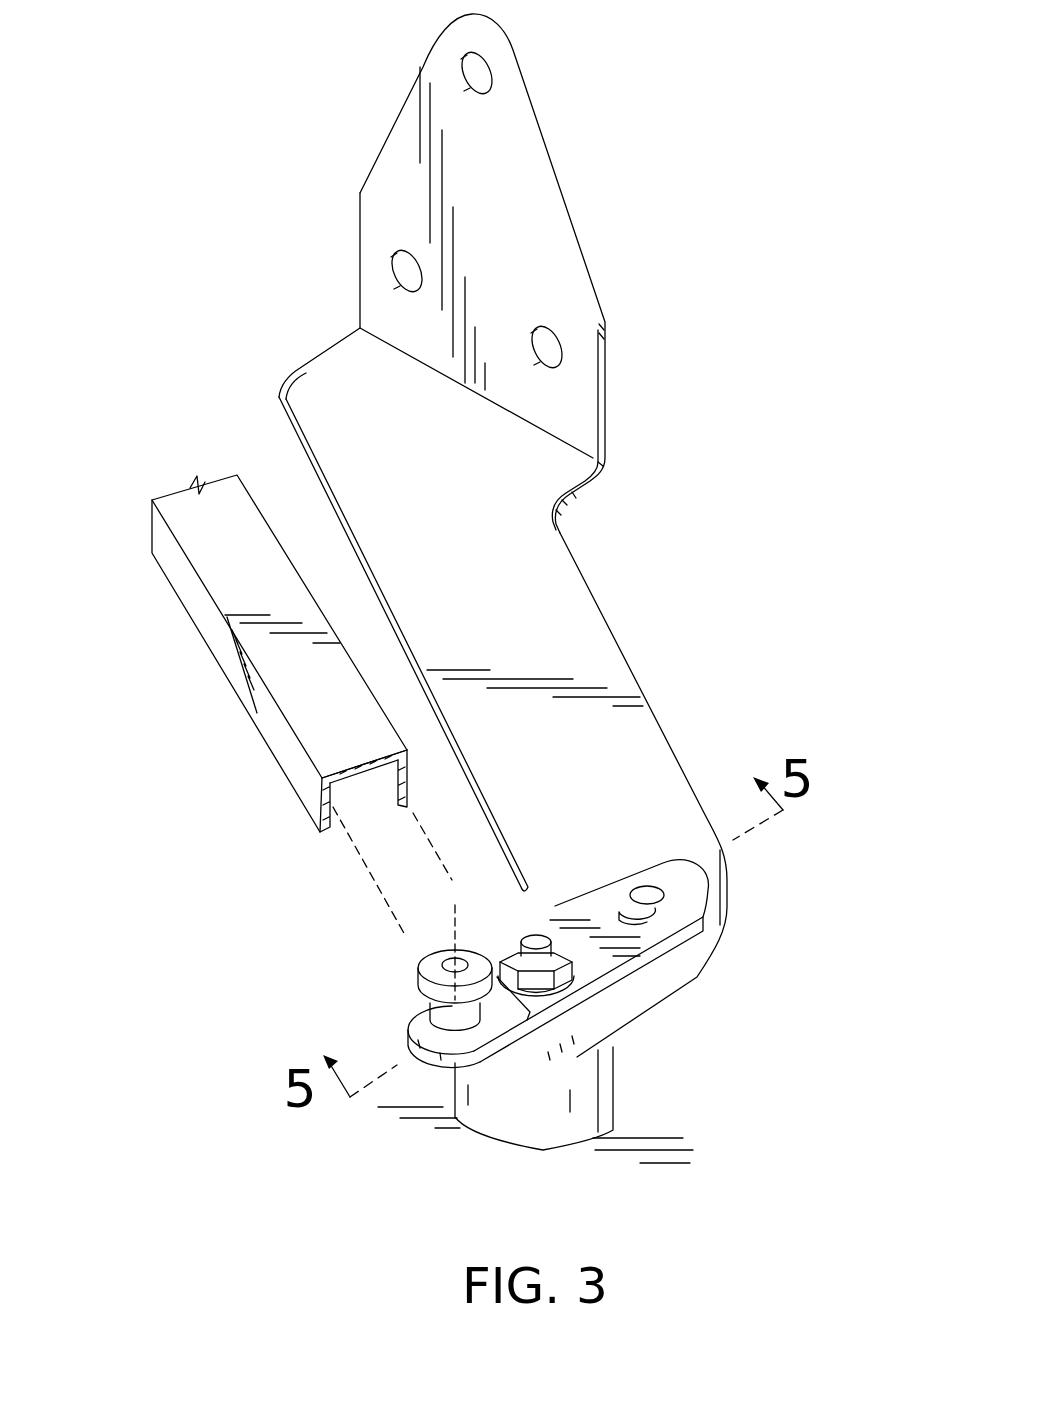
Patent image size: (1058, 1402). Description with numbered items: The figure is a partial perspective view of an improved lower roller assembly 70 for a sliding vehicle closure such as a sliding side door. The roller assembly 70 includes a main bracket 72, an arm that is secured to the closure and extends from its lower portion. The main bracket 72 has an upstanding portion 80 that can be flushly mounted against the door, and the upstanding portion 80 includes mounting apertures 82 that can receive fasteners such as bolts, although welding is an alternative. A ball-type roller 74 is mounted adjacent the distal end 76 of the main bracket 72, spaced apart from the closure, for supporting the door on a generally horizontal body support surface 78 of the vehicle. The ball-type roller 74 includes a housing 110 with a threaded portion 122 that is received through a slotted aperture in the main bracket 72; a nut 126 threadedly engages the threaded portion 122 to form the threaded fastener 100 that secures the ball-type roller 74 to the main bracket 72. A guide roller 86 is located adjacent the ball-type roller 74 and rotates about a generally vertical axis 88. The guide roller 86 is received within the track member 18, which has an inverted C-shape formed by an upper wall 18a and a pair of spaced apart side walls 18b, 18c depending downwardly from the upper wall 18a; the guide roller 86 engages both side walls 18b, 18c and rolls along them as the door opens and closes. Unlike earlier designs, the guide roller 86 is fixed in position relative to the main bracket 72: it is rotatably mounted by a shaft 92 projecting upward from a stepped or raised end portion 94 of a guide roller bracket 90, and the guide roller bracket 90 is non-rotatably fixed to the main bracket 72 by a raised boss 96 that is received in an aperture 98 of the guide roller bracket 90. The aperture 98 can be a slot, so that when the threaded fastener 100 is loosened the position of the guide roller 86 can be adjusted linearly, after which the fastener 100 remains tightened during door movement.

The track member 18 is at (240, 522).
The upper wall 18a is at (353, 767).
The side wall 18b is at (317, 810).
The side wall 18c is at (413, 777).
The roller assembly 70 is at (358, 1178).
The main bracket 72 is at (499, 535).
The ball-type roller 74 is at (528, 1150).
The distal end 76 is at (617, 1010).
The body support surface 78 is at (655, 1143).
The upstanding portion 80 is at (548, 205).
The mounting apertures 82 is at (480, 74).
The guide roller 86 is at (425, 1007).
The vertical axis 88 is at (440, 915).
The guide roller bracket 90 is at (620, 970).
The shaft 92 is at (447, 1063).
The end portion 94 is at (448, 1062).
The raised boss 96 is at (641, 887).
The aperture 98 is at (660, 886).
The threaded fastener 100 is at (541, 925).
The housing 110 is at (570, 1133).
The threaded portion 122 is at (495, 972).
The nut 126 is at (557, 952).